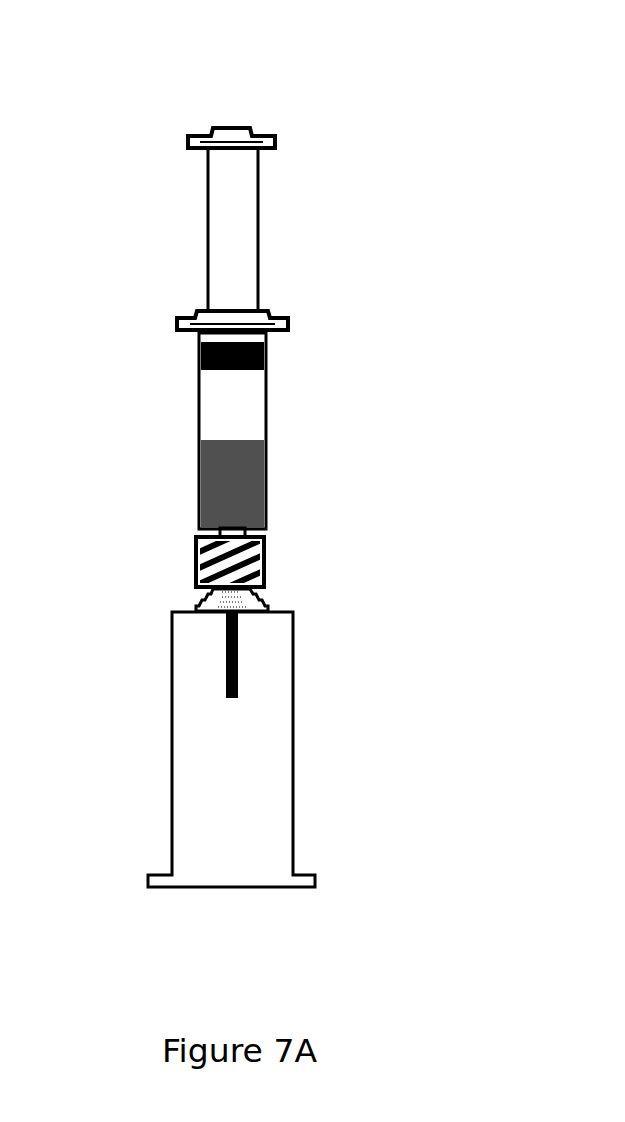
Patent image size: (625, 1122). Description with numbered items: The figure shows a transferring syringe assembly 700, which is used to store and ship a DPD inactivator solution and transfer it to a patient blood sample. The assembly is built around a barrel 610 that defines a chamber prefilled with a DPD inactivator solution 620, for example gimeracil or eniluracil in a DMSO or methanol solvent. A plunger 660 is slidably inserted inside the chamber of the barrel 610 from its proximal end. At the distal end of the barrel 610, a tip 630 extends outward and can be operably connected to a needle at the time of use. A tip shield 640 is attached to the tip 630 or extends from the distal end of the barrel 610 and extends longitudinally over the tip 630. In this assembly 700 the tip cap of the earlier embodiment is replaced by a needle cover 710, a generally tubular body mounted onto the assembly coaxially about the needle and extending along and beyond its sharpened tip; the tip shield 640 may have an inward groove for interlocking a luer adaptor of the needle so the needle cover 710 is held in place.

The transferring syringe assembly 700 is at (424, 145).
The plunger 660 is at (262, 252).
The barrel 610 is at (200, 390).
The DPD inactivator solution 620 is at (200, 463).
The tip 630 is at (243, 528).
The tip shield 640 is at (195, 553).
The needle cover 710 is at (294, 767).